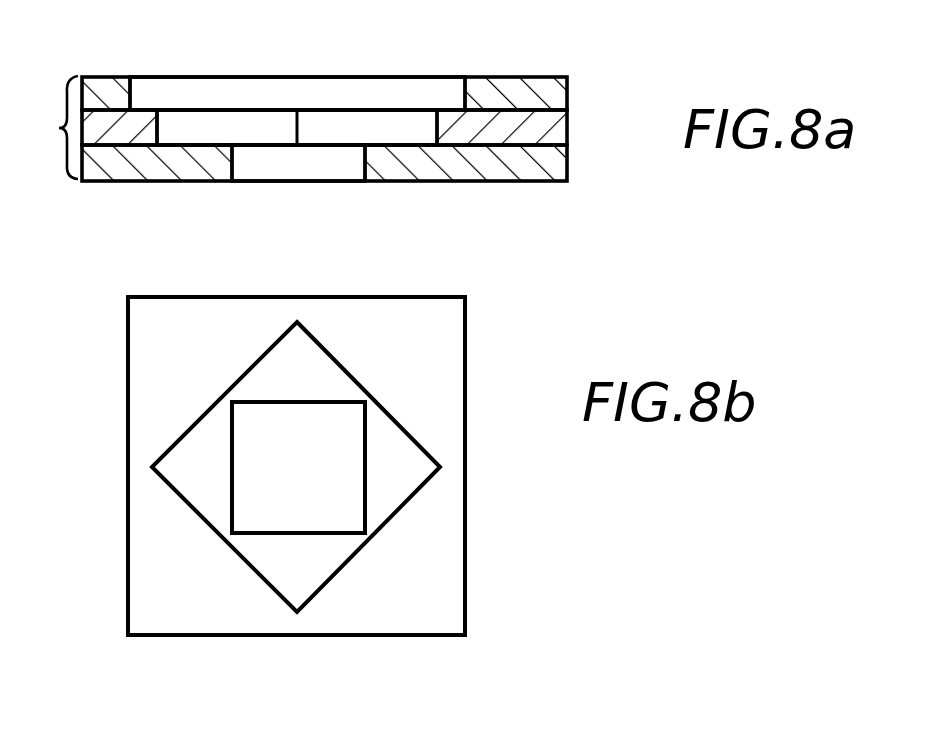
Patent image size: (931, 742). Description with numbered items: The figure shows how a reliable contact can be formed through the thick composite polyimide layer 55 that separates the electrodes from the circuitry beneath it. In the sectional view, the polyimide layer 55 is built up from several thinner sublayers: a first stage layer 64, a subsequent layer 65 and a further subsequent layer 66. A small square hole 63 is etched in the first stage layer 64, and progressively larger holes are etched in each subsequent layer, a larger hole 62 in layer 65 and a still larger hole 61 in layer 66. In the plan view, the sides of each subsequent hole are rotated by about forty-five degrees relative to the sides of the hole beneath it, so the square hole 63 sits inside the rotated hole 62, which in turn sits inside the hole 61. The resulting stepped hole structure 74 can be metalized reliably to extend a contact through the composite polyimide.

In FIG. 8A, the polyimide layer 55 is at (50, 127).
In FIG. 8A, the hole 61 is at (260, 80).
In FIG. 8B, the hole 61 is at (447, 418).
In FIG. 8A, the hole 62 is at (380, 118).
In FIG. 8B, the hole 62 is at (417, 482).
In FIG. 8A, the small square hole 63 is at (248, 163).
In FIG. 8B, the small square hole 63 is at (343, 498).
In FIG. 8A, the first stage layer 64 is at (567, 163).
In FIG. 8A, the subsequent layer 65 is at (567, 128).
In FIG. 8A, the subsequent layer 66 is at (567, 92).
In FIG. 8B, the hole structure 74 is at (230, 646).